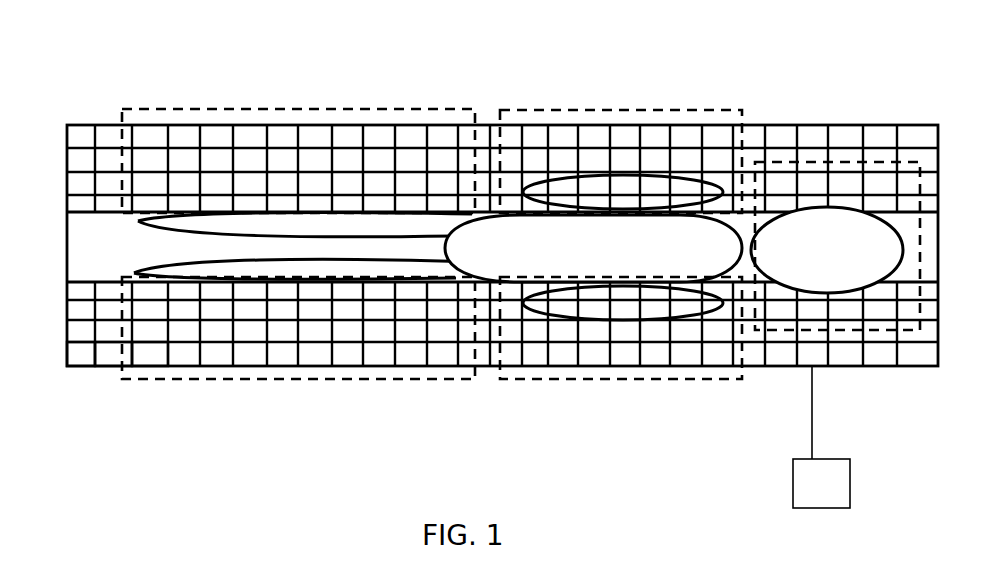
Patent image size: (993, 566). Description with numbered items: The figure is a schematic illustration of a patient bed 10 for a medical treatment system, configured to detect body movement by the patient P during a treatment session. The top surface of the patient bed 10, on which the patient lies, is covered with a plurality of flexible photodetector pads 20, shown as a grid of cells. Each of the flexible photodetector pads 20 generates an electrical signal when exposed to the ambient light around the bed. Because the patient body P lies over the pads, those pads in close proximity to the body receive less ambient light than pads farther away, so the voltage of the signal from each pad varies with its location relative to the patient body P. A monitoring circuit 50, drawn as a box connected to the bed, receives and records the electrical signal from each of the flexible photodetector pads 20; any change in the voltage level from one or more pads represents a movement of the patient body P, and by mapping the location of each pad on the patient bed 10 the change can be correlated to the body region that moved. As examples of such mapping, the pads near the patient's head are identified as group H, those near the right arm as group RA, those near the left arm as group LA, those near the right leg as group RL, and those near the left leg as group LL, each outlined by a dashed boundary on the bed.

The patient bed 10 is at (104, 110).
The flexible photodetector pads 20 is at (178, 352).
The monitoring circuit 50 is at (838, 490).
The group RL is at (305, 108).
The group LL is at (308, 381).
The group RA is at (600, 108).
The group LA is at (602, 381).
The group H is at (810, 150).
The patient body P is at (630, 242).